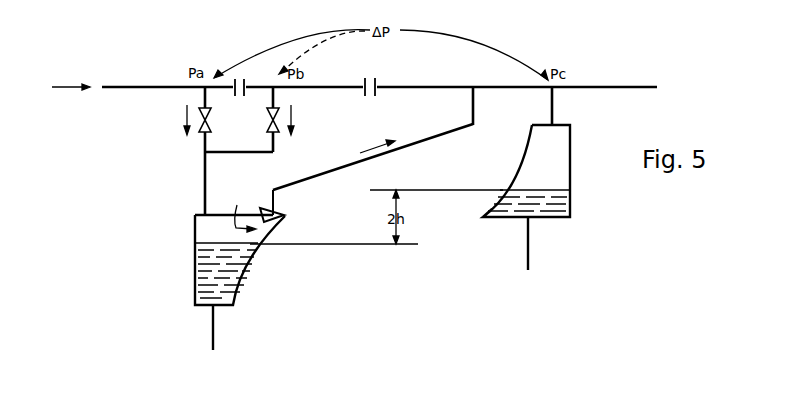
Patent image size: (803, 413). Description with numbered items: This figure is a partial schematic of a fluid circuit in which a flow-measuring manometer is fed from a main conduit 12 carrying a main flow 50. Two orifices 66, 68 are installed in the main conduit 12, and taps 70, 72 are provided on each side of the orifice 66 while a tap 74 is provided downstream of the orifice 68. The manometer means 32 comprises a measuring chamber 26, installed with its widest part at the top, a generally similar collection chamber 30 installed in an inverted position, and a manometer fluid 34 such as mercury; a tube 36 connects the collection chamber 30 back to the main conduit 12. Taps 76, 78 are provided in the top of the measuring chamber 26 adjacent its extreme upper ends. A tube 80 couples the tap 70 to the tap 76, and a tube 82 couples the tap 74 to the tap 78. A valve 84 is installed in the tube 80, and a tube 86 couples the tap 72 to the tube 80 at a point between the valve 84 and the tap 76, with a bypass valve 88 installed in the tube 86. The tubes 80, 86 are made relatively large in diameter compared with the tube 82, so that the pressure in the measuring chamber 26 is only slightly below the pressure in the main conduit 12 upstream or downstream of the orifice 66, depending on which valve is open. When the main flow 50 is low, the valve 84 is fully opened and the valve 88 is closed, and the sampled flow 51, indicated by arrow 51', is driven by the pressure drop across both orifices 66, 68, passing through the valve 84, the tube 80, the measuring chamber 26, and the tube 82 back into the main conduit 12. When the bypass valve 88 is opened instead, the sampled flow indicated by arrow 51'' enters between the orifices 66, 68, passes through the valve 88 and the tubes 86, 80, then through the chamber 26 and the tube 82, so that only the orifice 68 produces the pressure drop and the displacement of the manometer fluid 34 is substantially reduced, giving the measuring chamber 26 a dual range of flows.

The main conduit 12 is at (112, 87).
The main flow 50 is at (64, 86).
The orifice 66 is at (244, 82).
The orifice 68 is at (377, 82).
The tap 70 is at (203, 90).
The tap 72 is at (271, 89).
The tap 74 is at (476, 90).
The tap 76 is at (203, 214).
The tap 78 is at (272, 214).
The tube 80 is at (204, 162).
The tube 82 is at (414, 144).
The valve 84 is at (239, 143).
The tube 86 is at (274, 143).
The bypass valve 88 is at (250, 124).
The measuring chamber 26 is at (195, 233).
The manometer fluid 34 is at (240, 272).
The collection chamber 30 is at (572, 160).
The manometer means 32 is at (565, 247).
The tube 36 is at (553, 104).
The sampled flow 51 is at (306, 178).
The arrow 51' is at (172, 120).
The arrow 51'' is at (304, 120).